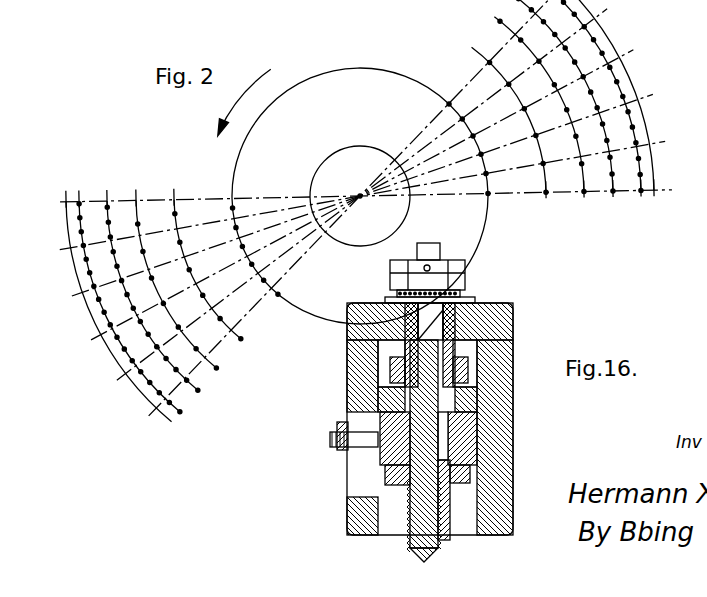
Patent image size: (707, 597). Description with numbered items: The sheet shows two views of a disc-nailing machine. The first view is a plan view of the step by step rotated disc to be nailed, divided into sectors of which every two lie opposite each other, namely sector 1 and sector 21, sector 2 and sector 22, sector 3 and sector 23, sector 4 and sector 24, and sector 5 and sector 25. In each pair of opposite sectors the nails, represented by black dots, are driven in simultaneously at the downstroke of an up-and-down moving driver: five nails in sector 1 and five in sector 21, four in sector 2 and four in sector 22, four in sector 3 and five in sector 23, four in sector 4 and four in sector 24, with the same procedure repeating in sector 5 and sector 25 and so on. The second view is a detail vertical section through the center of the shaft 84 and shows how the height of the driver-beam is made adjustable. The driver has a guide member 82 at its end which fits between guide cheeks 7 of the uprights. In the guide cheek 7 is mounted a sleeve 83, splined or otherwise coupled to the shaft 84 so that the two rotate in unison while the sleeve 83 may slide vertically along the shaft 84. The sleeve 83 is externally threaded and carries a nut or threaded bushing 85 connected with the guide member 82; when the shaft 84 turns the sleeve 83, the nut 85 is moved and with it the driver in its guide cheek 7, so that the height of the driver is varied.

In FIG. 2, the sector 1 is at (173, 307).
In FIG. 2, the sector 2 is at (149, 289).
In FIG. 2, the sector 3 is at (131, 295).
In FIG. 2, the sector 4 is at (114, 307).
In FIG. 2, the sector 5 is at (106, 312).
In FIG. 2, the sector 21 is at (365, 190).
In FIG. 2, the sector 22 is at (366, 179).
In FIG. 2, the sector 23 is at (365, 180).
In FIG. 2, the sector 24 is at (368, 182).
In FIG. 2, the sector 25 is at (372, 183).
In FIG. 16, the guide cheek 7 is at (503, 467).
In FIG. 16, the guide member 82 is at (473, 431).
In FIG. 16, the sleeve 83 is at (446, 332).
In FIG. 16, the shaft 84 is at (442, 549).
In FIG. 16, the nut 85 is at (380, 383).